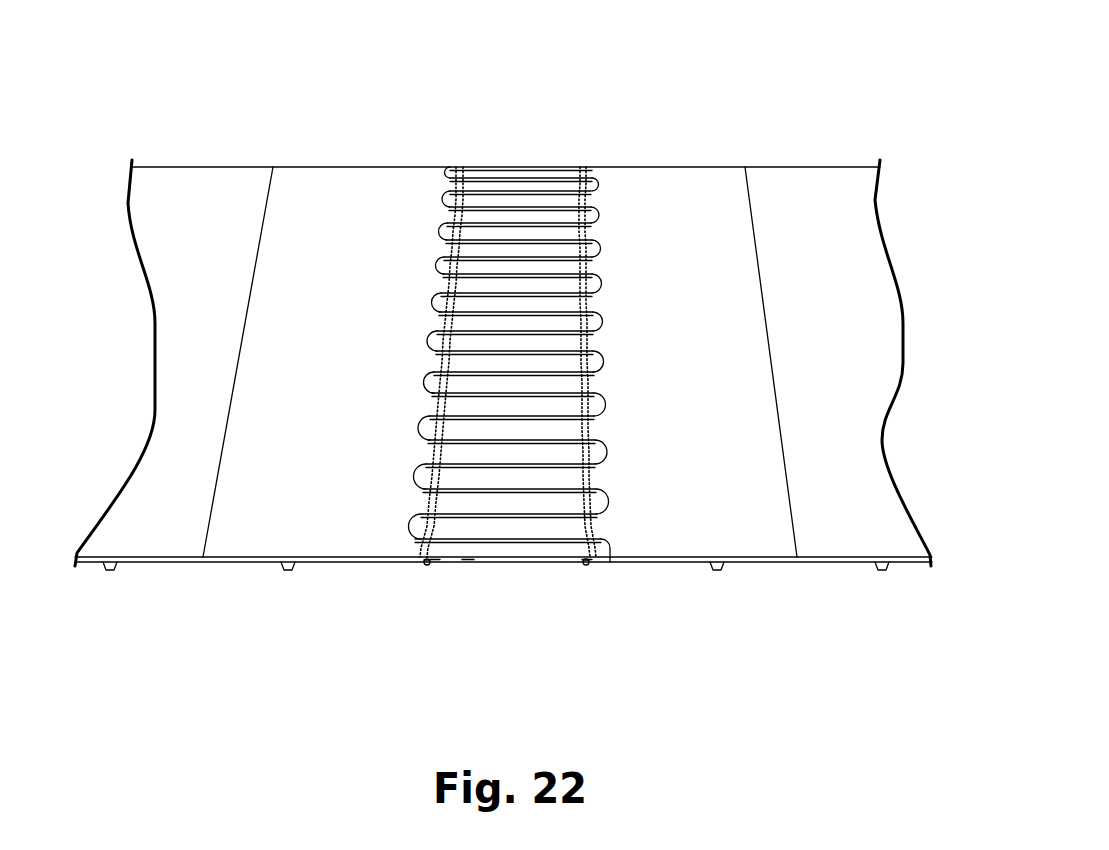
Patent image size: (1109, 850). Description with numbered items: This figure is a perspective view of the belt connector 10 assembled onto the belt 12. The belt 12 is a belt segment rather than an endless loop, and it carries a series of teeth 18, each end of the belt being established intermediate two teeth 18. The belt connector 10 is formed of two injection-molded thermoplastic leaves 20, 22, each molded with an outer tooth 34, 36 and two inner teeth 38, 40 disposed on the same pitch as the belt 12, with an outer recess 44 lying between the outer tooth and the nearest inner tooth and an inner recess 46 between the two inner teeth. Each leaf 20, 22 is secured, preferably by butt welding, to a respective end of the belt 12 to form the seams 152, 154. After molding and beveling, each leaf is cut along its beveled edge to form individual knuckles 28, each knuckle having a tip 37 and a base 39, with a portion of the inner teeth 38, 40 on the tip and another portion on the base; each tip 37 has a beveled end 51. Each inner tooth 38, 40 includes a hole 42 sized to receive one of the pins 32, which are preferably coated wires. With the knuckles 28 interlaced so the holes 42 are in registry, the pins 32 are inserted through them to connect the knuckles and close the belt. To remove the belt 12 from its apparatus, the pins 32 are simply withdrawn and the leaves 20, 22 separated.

The belt connector 10 is at (503, 354).
The belt 12 is at (840, 158).
The teeth 18 is at (112, 571).
The leaf 20 is at (263, 327).
The leaf 22 is at (761, 323).
The knuckle 28 is at (510, 381).
The pin 32 is at (425, 565).
The outer tooth 34 is at (283, 571).
The outer tooth 36 is at (718, 569).
The tip 37 is at (577, 287).
The inner tooth 38 is at (428, 567).
The base 39 is at (582, 268).
The inner tooth 40 is at (587, 567).
The hole 42 is at (432, 565).
The outer recess 44 is at (358, 563).
The inner recess 46 is at (468, 563).
The beveled end 51 is at (447, 262).
The seam 152 is at (268, 198).
The seam 154 is at (753, 212).